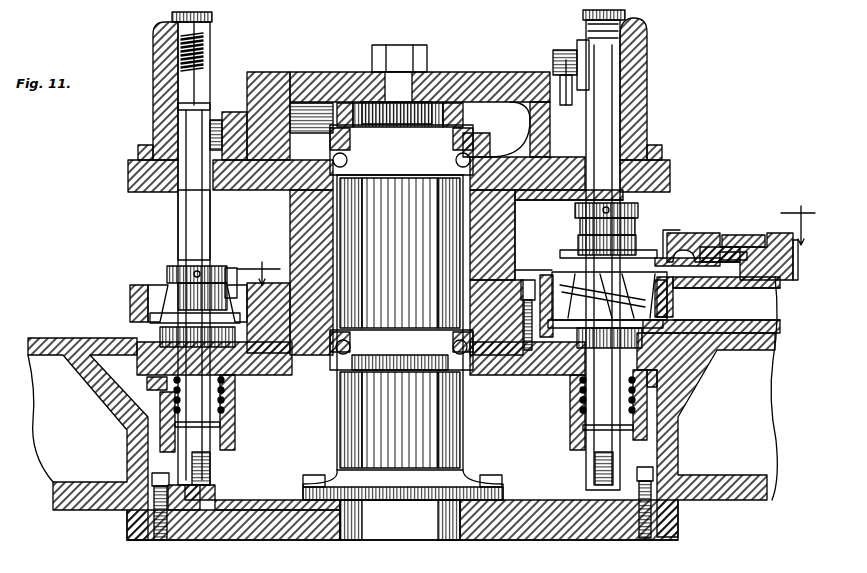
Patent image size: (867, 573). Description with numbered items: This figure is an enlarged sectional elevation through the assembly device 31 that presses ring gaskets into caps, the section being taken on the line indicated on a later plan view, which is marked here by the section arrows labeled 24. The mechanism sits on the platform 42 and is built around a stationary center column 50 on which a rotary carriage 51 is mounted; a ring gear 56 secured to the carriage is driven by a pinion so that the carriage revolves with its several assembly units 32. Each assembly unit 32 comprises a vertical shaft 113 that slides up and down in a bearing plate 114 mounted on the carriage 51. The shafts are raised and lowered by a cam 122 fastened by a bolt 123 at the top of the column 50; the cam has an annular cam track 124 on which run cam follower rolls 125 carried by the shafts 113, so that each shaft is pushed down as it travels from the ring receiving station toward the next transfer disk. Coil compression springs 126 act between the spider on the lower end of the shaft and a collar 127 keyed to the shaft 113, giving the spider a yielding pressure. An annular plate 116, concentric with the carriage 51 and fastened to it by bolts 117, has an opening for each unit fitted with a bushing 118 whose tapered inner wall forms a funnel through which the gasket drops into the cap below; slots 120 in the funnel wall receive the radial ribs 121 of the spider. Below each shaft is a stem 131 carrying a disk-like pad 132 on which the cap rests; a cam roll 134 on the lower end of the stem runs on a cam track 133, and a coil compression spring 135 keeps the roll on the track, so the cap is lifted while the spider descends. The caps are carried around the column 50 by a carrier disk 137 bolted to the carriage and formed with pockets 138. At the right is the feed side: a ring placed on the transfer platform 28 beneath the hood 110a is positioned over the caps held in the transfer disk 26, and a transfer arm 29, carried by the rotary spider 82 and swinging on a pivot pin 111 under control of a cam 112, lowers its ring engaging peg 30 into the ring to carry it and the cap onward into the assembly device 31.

The assembly device 31 is at (145, 114).
The vertical shaft 113 is at (200, 122).
The bearing plate 114 is at (140, 180).
The assembly unit 32 is at (164, 245).
The cam 122 is at (468, 80).
The bolt 123 is at (398, 55).
The annular cam track 124 is at (562, 50).
The cam follower roll 125 is at (566, 90).
The rotary carriage 51 is at (512, 218).
The stationary center column 50 is at (356, 438).
The platform 42 is at (528, 504).
The ring gear 56 is at (147, 382).
The collar 127 is at (167, 273).
The coil compression spring 126 is at (232, 280).
The Fig. 24 section line 24 is at (526, 236).
The bushing 118 is at (132, 294).
The annular plate 116 is at (133, 310).
The radial rib 121 is at (158, 327).
The stem 131 is at (203, 440).
The carrier disk 137 is at (232, 385).
The cam roll 134 is at (212, 461).
The cam track 133 is at (205, 492).
The bolt 117 is at (528, 280).
The hood 110a is at (650, 272).
The ring engaging peg 30 is at (596, 300).
The pad 132 is at (609, 338).
The slot 120 is at (664, 295).
The cam 112 is at (680, 290).
The transfer platform 28 is at (775, 290).
The transfer disk 26 is at (772, 330).
The transfer arm 29 is at (715, 233).
The pivot pin 111 is at (739, 235).
The rotary spider 82 is at (780, 238).
The coil compression spring 135 is at (580, 413).
The pocket 138 is at (568, 386).